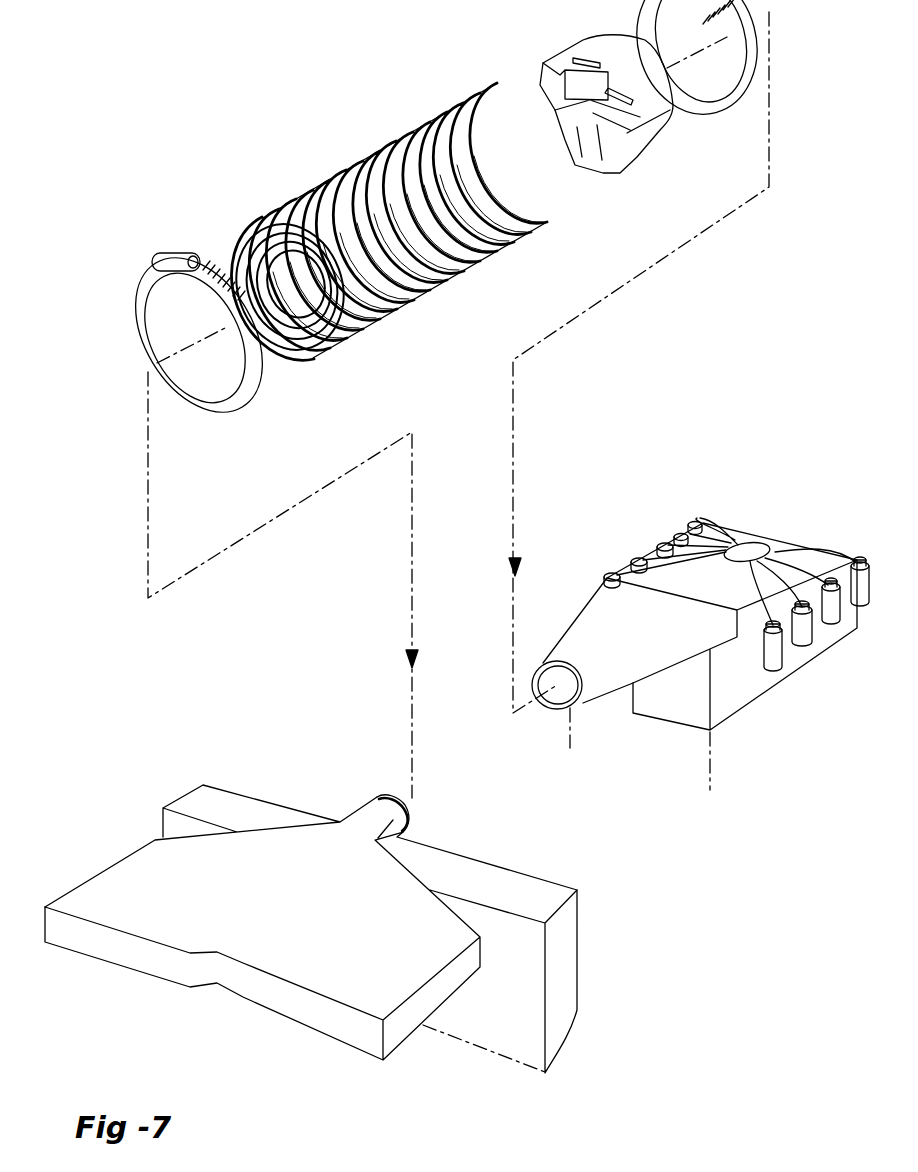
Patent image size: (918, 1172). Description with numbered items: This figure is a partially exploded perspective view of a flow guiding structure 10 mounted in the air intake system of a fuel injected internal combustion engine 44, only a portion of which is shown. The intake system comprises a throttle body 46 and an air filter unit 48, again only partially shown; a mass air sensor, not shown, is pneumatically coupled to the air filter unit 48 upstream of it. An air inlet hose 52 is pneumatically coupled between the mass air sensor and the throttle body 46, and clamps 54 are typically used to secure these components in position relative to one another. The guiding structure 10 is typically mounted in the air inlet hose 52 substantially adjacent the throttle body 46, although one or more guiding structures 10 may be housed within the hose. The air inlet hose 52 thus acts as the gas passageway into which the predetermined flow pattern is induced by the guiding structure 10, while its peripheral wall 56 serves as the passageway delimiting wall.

The flow guiding structure 10 is at (609, 185).
The fuel injected internal combustion engine 44 is at (756, 509).
The throttle body 46 is at (608, 653).
The air filter unit 48 is at (316, 954).
The air inlet hose 52 is at (440, 278).
The clamps 54 is at (207, 404).
The peripheral wall 56 is at (293, 360).